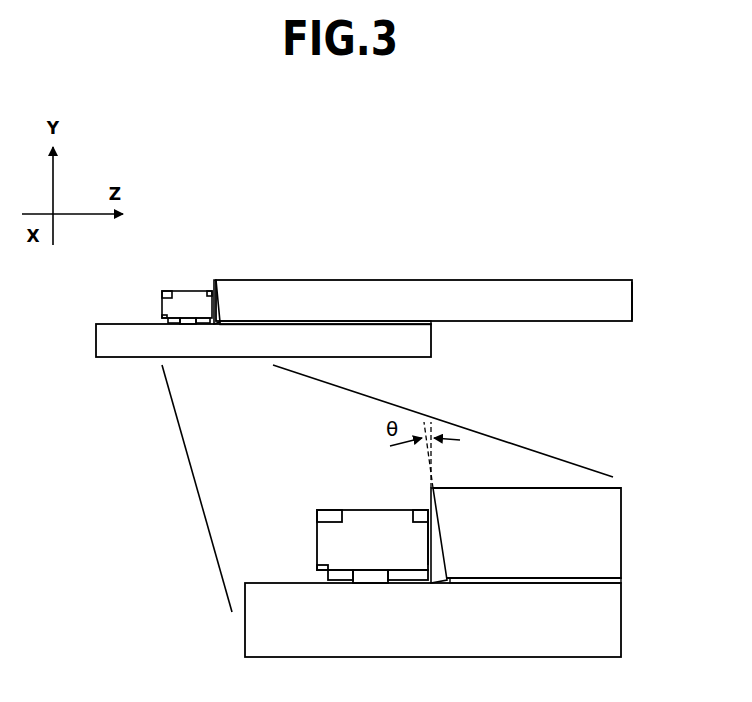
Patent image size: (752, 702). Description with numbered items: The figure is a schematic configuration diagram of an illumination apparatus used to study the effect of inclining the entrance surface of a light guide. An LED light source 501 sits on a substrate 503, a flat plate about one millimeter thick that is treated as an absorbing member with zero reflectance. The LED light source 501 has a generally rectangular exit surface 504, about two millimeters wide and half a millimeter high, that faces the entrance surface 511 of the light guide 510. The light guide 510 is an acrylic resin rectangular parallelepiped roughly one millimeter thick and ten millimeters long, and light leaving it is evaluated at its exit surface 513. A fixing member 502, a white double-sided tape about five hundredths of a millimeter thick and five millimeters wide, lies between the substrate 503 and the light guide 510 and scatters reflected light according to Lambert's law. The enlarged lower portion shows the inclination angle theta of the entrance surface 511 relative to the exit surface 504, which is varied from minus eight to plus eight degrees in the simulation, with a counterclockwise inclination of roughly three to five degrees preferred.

The LED light source 501 is at (181, 297).
The fixing member 502 is at (418, 325).
The substrate 503 is at (115, 324).
The exit surface of LED light source 504 is at (423, 537).
The light guide 510 is at (341, 288).
The entrance surface of light guide 511 is at (218, 291).
The exit surface of light guide 513 is at (632, 298).